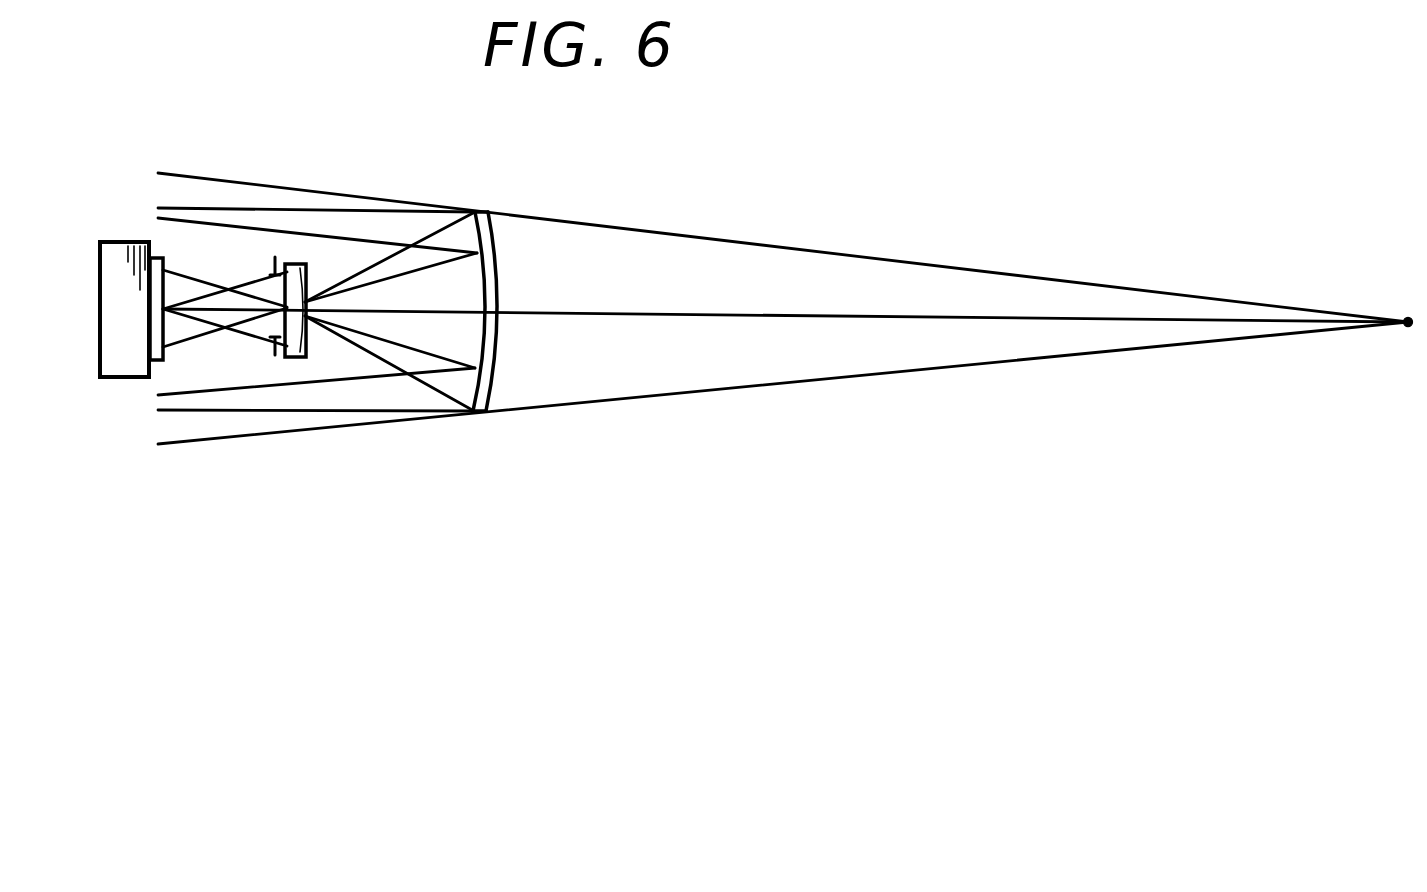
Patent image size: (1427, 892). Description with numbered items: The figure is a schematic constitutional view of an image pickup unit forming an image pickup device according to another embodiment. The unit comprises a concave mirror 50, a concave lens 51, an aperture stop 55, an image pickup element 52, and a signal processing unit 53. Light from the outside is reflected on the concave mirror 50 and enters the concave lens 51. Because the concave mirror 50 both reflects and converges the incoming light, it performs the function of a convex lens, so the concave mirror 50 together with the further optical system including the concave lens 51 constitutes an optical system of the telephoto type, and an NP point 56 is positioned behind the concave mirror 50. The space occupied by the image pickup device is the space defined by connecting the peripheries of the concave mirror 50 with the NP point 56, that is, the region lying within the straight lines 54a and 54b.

The concave mirror 50 is at (493, 345).
The concave lens 51 is at (307, 336).
The image pickup element 52 is at (153, 362).
The signal processing unit 53 is at (127, 265).
The straight line 54a is at (698, 232).
The straight line 54b is at (825, 385).
The aperture stop 55 is at (273, 266).
The NP point 56 is at (1410, 330).